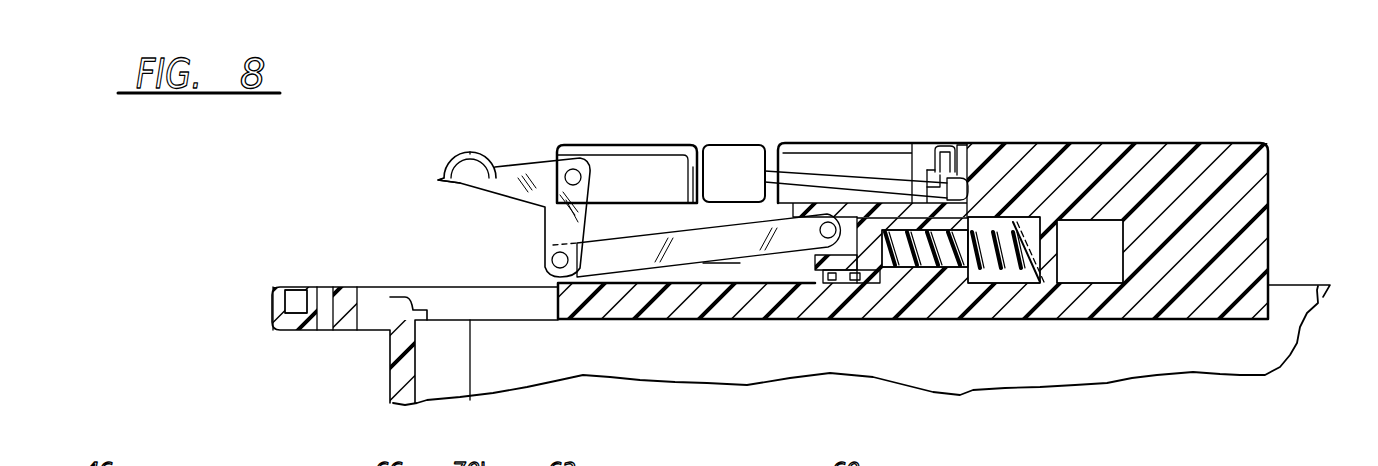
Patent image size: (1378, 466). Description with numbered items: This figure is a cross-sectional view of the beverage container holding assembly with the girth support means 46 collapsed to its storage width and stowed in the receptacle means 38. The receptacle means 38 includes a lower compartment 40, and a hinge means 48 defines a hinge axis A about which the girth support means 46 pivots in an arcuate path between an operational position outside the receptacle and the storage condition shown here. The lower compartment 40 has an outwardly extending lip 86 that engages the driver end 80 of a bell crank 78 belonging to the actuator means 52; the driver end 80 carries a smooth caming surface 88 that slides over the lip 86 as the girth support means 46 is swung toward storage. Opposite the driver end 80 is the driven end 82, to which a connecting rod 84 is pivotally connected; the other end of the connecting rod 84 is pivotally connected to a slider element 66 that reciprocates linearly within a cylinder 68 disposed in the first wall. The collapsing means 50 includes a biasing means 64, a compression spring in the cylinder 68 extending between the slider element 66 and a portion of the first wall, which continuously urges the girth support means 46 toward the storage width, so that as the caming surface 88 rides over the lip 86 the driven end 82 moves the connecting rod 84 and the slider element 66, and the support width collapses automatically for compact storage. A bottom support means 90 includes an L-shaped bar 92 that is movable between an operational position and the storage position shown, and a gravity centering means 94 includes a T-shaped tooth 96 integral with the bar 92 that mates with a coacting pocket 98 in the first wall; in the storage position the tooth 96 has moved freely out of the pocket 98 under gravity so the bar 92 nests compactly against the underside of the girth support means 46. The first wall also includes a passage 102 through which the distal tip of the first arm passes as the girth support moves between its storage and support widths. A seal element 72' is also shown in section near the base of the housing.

The receptacle means 38 is at (1297, 274).
The lower compartment 40 is at (1270, 377).
The girth support means 46 is at (1257, 141).
The hinge means 48 is at (413, 297).
The collapsing means 50 is at (475, 153).
The actuator means 52 is at (703, 263).
The biasing means 64 is at (1012, 283).
The slider element 66 is at (948, 283).
The cylinder 68 is at (1022, 220).
The seal 72' is at (846, 308).
The bell crank 78 is at (533, 200).
The driver end 80 is at (437, 178).
The driven end 82 is at (547, 262).
The connecting rod 84 is at (660, 237).
The lip 86 is at (272, 310).
The caming surface 88 is at (448, 163).
The bottom support means 90 is at (728, 143).
The L-shaped bar 92 is at (810, 177).
The gravity centering means 94 is at (952, 141).
The T-shaped tooth 96 is at (933, 187).
The pocket 98 is at (938, 148).
The passage 102 is at (1120, 237).
The hinge axis A is at (390, 297).